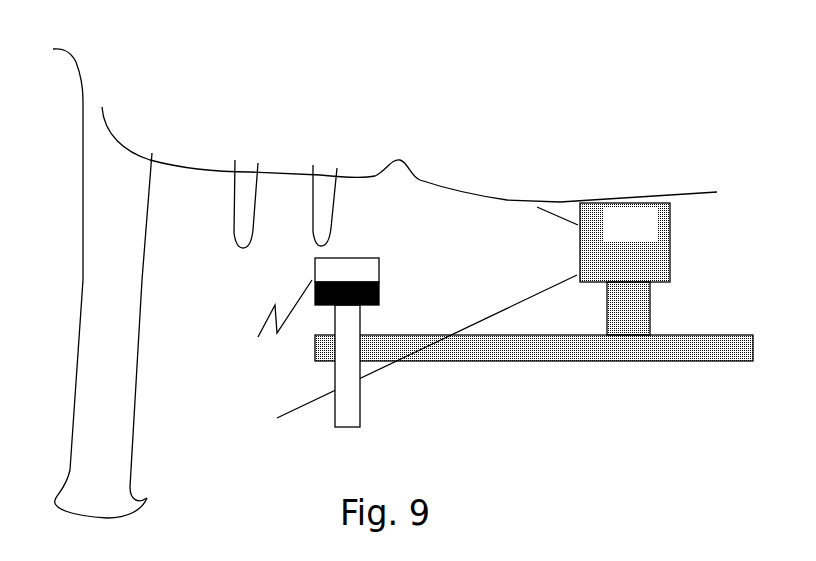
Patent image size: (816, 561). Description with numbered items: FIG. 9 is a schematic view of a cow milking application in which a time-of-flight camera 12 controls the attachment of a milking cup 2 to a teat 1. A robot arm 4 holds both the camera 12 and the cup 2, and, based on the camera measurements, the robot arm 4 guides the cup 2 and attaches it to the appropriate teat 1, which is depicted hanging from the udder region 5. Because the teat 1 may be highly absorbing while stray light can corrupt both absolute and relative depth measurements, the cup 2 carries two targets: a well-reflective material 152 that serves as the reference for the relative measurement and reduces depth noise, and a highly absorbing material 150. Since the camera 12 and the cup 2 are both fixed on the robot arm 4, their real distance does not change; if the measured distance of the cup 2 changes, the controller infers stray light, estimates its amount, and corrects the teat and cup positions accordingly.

The oral cavity / cheek 5 is at (385, 283).
The teat 1 is at (325, 205).
The cup 2 is at (272, 333).
The robot arm 4 is at (534, 351).
The camera 12 is at (625, 269).
The highly absorbing material or target 150 is at (380, 300).
The well-reflective material or target 152 is at (317, 268).